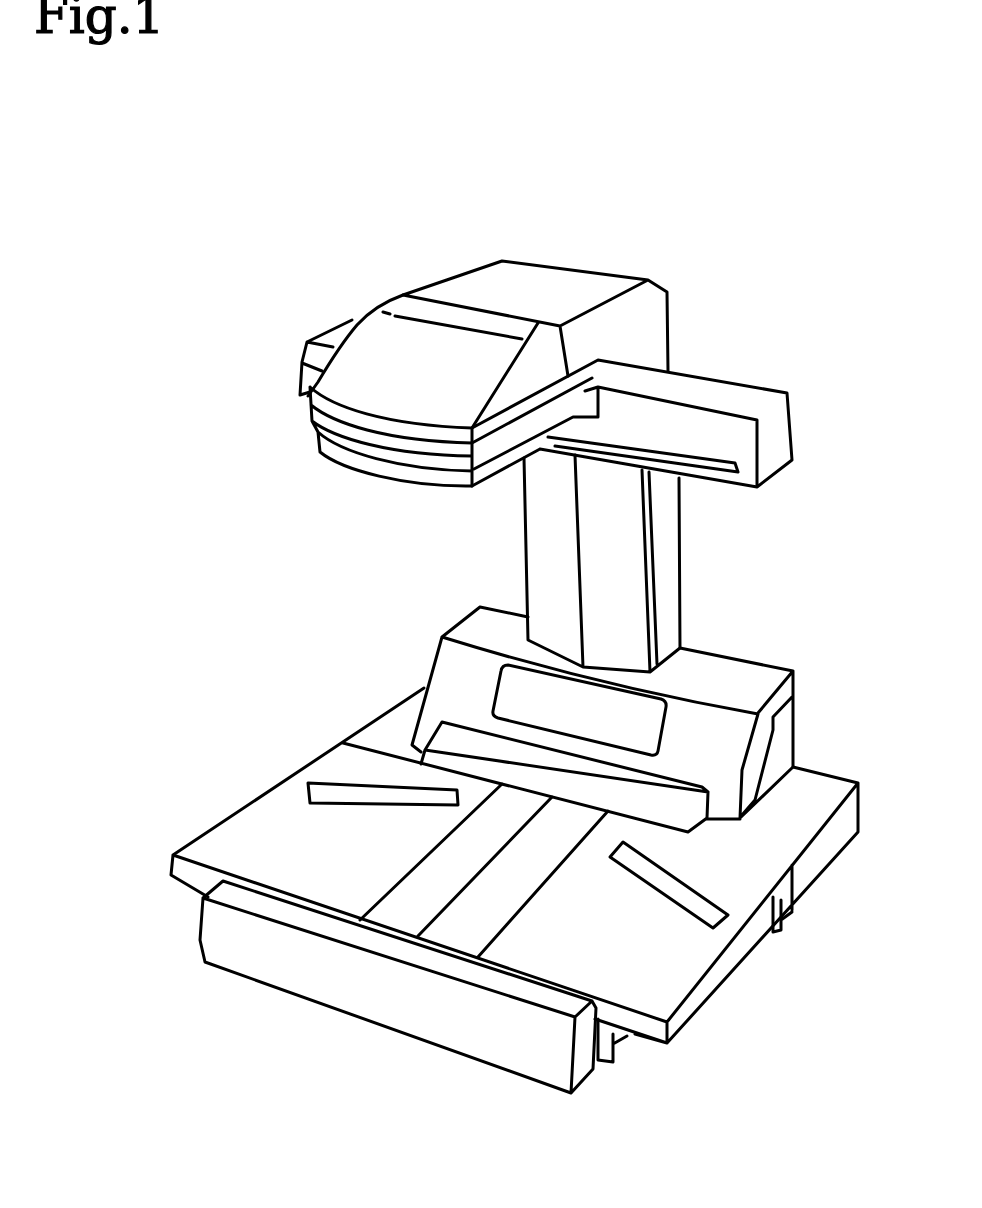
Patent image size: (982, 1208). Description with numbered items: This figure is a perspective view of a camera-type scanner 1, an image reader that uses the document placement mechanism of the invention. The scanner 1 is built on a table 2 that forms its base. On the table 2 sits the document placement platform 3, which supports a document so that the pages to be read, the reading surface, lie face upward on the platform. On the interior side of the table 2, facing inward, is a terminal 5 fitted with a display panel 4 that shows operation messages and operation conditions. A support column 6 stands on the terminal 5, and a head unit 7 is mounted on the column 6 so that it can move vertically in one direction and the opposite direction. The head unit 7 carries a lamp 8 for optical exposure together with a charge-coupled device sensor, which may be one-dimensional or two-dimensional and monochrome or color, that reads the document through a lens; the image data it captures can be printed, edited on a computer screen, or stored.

The scanner 1 is at (235, 232).
The table 2 is at (623, 1034).
The document placement platform 3 is at (242, 833).
The display panel 4 is at (643, 735).
The terminal 5 is at (713, 660).
The support column 6 is at (665, 548).
The head unit 7 is at (344, 372).
The lamp 8 is at (737, 393).